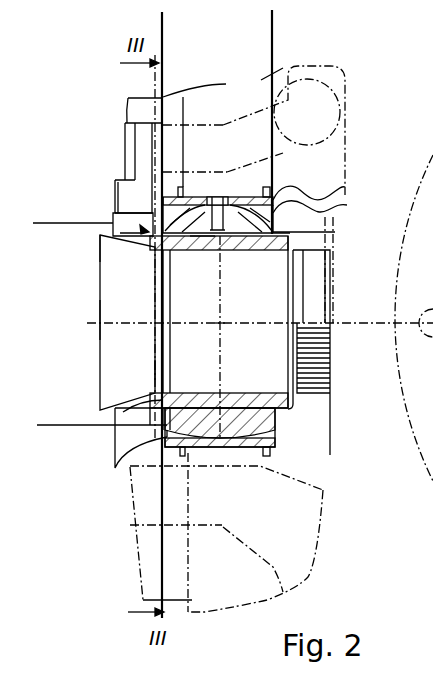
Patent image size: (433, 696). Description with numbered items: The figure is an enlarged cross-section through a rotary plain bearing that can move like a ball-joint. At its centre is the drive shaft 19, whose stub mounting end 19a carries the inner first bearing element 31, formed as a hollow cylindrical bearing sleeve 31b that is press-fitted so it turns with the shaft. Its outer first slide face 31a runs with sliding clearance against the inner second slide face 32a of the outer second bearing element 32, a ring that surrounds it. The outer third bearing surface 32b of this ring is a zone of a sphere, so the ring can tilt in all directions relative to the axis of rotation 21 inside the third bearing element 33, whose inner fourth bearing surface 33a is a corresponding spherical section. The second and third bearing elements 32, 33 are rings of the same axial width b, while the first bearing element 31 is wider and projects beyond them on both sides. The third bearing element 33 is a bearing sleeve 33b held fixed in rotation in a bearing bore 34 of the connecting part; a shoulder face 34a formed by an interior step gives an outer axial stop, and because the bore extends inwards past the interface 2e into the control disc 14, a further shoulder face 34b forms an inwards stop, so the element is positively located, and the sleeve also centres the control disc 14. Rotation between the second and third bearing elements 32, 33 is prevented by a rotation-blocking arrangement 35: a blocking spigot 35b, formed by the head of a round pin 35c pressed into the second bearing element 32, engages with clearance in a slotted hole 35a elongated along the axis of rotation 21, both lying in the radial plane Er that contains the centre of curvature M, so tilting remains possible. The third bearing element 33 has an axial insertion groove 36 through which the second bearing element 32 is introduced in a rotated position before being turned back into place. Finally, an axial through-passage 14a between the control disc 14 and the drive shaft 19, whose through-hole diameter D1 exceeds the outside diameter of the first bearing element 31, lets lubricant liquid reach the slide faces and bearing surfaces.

The control disc 14 is at (140, 108).
The axial through-passage 14a is at (100, 251).
The drive shaft 19 is at (110, 352).
The stub mounting end 19a is at (177, 370).
The axis of rotation 21 is at (90, 323).
The interface 2e is at (183, 113).
The inner first bearing element 31 is at (113, 222).
The outer first slide face 31a is at (168, 278).
The bearing sleeve 31b is at (123, 435).
The outer second bearing element 32 is at (238, 252).
The inner second slide face 32a is at (200, 252).
The outer third bearing surface 32b is at (243, 196).
The third bearing element 33 is at (277, 448).
The inner fourth bearing surface 33a is at (244, 449).
The bearing sleeve 33b is at (207, 449).
The bearing bore 34 is at (313, 193).
The shoulder face 34a is at (332, 213).
The shoulder face 34b is at (163, 200).
The rotation-blocking arrangement 35 is at (220, 184).
The slotted hole 35a is at (222, 124).
The blocking spigot 35b is at (211, 170).
The round pin 35c is at (283, 232).
The axial insertion groove 36 is at (165, 205).
The diameter of the through-hole D1 is at (40, 223).
The width b is at (272, 15).
The centre of curvature M is at (217, 325).
The radial plane Er is at (224, 343).